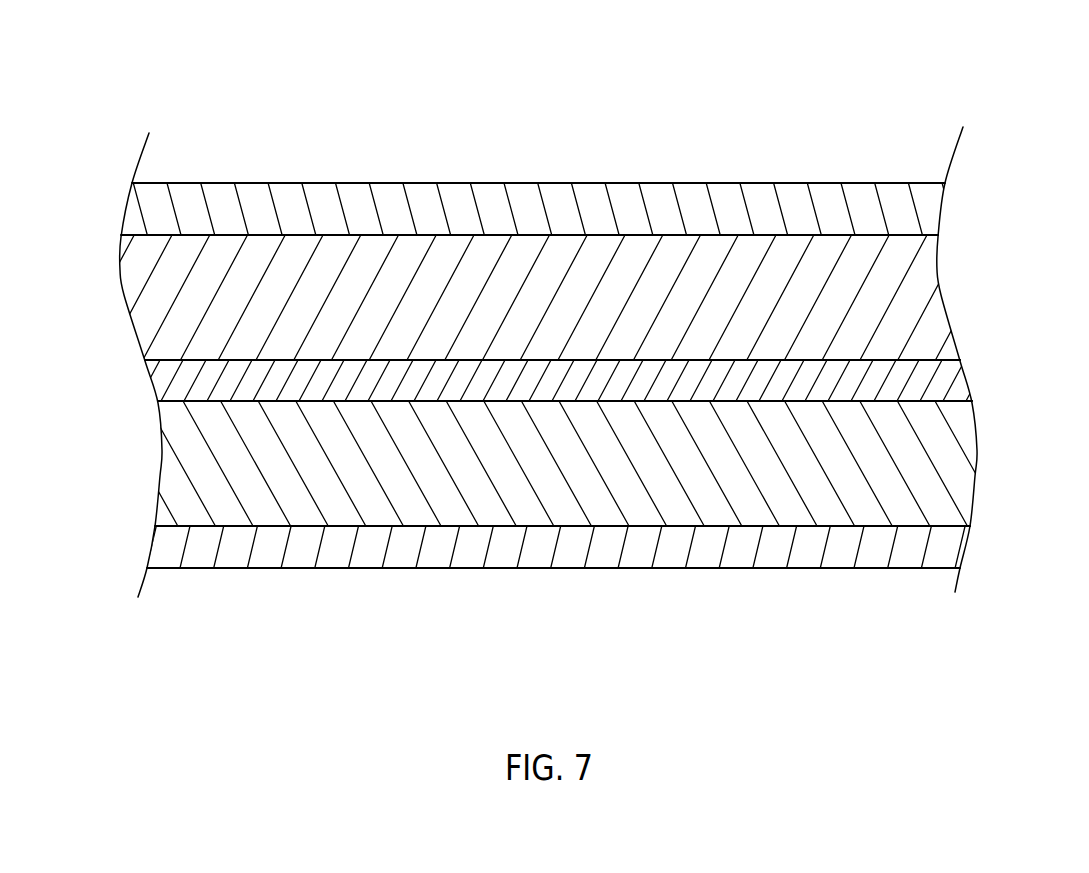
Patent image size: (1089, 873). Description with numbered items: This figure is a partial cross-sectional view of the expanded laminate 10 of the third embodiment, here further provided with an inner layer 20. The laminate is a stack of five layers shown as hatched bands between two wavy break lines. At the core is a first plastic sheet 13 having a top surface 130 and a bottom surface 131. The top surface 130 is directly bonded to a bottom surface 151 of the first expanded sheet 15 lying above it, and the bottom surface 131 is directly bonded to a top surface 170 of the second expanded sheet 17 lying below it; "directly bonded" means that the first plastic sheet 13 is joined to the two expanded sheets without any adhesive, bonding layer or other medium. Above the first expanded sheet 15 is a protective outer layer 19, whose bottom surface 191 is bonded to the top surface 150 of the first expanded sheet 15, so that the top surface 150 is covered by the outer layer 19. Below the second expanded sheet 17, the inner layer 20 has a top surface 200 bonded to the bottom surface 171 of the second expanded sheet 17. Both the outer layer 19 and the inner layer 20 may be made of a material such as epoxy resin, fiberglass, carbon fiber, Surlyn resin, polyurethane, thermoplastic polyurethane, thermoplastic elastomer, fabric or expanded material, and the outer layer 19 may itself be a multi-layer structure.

The expanded laminate 10 is at (808, 127).
The protective outer layer 19 is at (142, 202).
The bottom surface of outer layer 191 is at (925, 233).
The top surface of first expanded sheet 150 is at (908, 230).
The first expanded sheet 15 is at (170, 268).
The bottom surface of first expanded sheet 151 is at (958, 356).
The top surface of first plastic sheet 130 is at (922, 353).
The first plastic sheet 13 is at (172, 377).
The bottom surface of first plastic sheet 131 is at (970, 400).
The top surface of second expanded sheet 170 is at (957, 396).
The second expanded sheet 17 is at (172, 481).
The bottom surface of second expanded sheet 171 is at (952, 525).
The top surface of inner layer 200 is at (942, 522).
The inner layer 20 is at (173, 552).